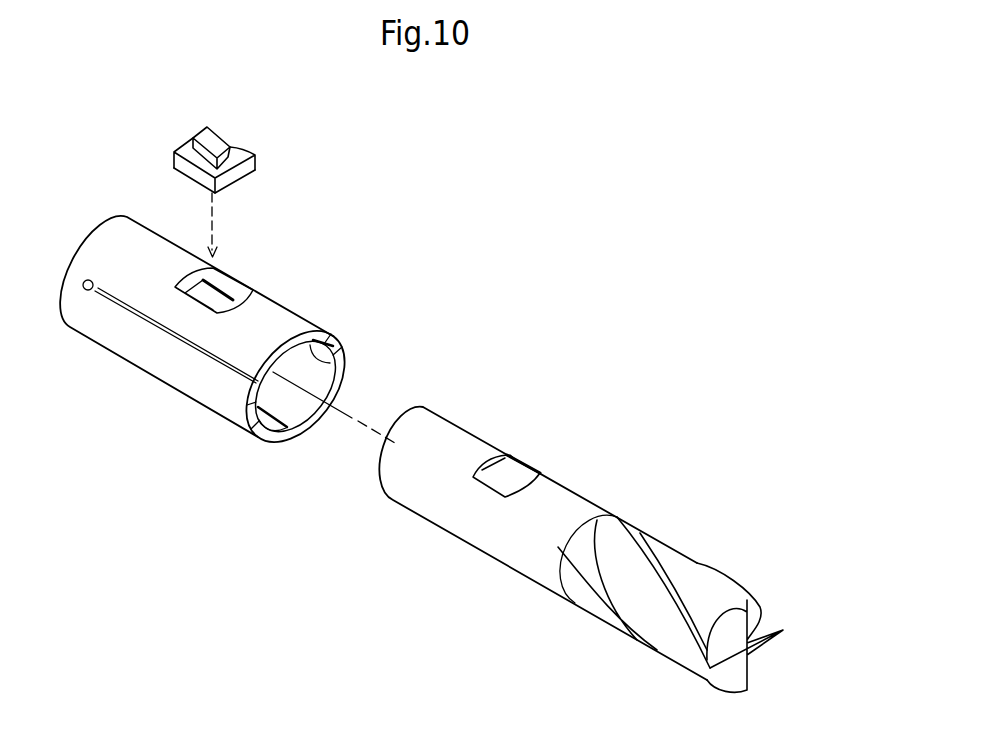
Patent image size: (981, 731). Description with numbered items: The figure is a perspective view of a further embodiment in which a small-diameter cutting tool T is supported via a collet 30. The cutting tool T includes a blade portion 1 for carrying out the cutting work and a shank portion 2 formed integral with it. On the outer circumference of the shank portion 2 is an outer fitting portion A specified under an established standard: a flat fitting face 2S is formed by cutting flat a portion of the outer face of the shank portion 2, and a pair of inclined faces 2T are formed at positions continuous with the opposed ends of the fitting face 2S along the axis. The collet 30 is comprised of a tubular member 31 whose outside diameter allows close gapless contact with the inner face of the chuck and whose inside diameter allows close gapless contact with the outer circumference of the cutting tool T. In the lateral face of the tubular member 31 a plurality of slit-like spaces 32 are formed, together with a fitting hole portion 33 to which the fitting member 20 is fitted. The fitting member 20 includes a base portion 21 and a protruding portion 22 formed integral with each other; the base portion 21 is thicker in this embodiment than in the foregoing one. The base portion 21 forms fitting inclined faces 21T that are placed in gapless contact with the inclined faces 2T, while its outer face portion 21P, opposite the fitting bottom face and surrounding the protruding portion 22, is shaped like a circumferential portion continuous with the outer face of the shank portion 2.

The fitting member 20 is at (227, 128).
The base portion 21 is at (276, 155).
The outer face portion 21P is at (243, 150).
The fitting inclined faces 21T is at (238, 183).
The protruding portion 22 is at (202, 133).
The collet 30 is at (307, 307).
The tubular member 31 is at (172, 380).
The slit-like spaces 32 is at (142, 317).
The fitting hole portion 33 is at (223, 282).
The cutting tool T is at (635, 492).
The blade portion 1 is at (647, 630).
The shank portion 2 is at (433, 515).
The fitting face 2S is at (502, 480).
The inclined faces 2T is at (493, 457).
The outer fitting portion A is at (513, 458).